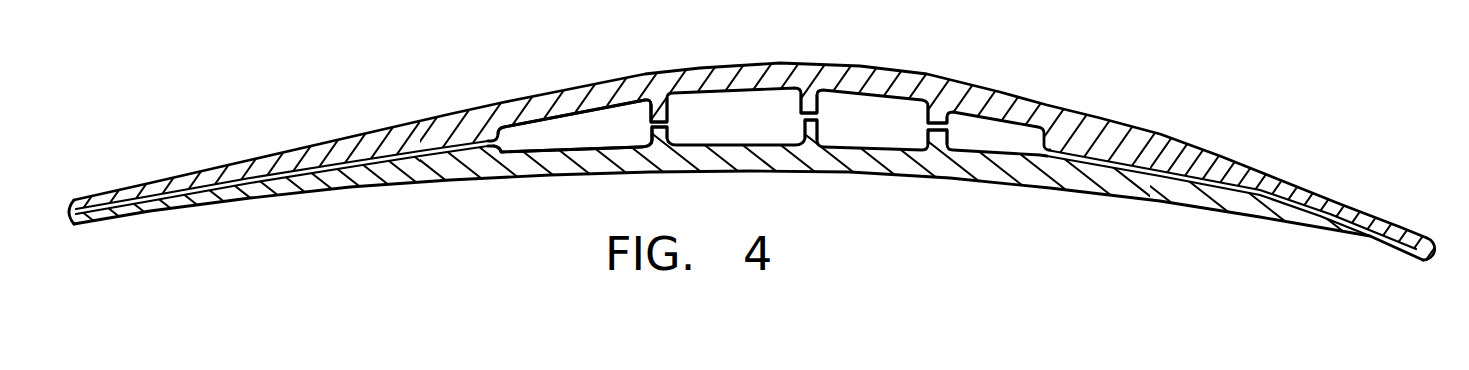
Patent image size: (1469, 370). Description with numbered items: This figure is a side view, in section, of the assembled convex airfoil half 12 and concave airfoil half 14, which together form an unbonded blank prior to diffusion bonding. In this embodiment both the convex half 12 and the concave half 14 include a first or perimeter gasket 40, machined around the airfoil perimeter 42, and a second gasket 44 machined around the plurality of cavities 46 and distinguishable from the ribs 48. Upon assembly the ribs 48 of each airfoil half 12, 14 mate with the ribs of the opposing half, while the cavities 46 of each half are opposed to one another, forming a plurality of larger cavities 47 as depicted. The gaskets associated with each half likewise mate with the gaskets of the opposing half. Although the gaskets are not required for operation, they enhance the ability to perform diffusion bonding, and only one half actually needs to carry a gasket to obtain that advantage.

The convex airfoil half 12 is at (977, 95).
The concave airfoil half 14 is at (1047, 186).
The first or perimeter gasket 40 is at (1362, 231).
The airfoil perimeter 42 is at (72, 226).
The second gasket 44 is at (495, 142).
The cavities 46 is at (878, 103).
The larger cavities 47 is at (593, 128).
The ribs 48 is at (663, 112).